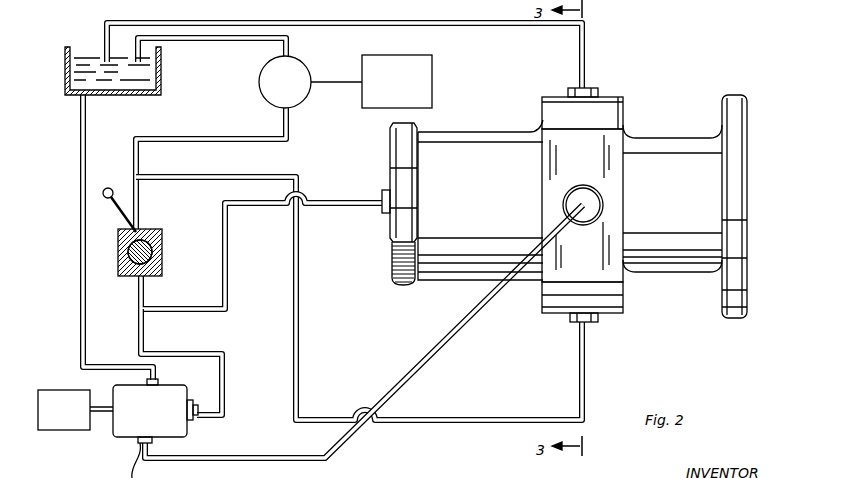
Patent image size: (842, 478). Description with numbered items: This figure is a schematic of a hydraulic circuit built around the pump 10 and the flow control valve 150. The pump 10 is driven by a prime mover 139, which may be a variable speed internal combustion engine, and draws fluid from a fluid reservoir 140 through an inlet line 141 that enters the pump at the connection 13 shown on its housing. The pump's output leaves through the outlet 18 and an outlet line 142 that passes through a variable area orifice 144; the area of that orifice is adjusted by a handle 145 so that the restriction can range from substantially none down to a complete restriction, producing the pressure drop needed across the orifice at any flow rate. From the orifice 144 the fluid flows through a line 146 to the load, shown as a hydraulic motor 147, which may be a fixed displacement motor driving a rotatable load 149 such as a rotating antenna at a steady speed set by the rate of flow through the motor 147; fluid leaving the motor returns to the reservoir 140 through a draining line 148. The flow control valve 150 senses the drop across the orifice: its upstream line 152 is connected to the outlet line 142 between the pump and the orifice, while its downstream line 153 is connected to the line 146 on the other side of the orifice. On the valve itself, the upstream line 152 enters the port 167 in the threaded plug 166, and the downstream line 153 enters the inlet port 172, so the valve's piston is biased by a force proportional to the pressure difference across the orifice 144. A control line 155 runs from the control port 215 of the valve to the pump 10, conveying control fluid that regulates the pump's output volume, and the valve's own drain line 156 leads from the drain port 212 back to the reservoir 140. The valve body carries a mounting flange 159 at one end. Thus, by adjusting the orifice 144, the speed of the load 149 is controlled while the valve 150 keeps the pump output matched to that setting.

The pump 10 is at (122, 431).
The pump inlet fitting 13 is at (166, 373).
The outlet 18 is at (197, 414).
The prime mover 139 is at (60, 425).
The fluid reservoir 140 is at (118, 96).
The inlet line 141 is at (80, 216).
The outlet line 142 is at (145, 340).
The variable area orifice 144 is at (162, 248).
The handle 145 is at (116, 190).
The line 146 is at (222, 129).
The hydraulic motor 147 is at (300, 70).
The draining line 148 is at (212, 42).
The rotatable load 149 is at (432, 72).
The flow control valve 150 is at (498, 132).
The upstream line 152 is at (228, 264).
The downstream line 153 is at (298, 286).
The control line 155 is at (432, 358).
The drain line 156 is at (445, 24).
The mounting flange 159 is at (746, 108).
The threaded plug 166 is at (394, 150).
The port 167 is at (384, 212).
The inlet port 172 is at (596, 322).
The drain port 212 is at (598, 92).
The control port 215 is at (595, 180).